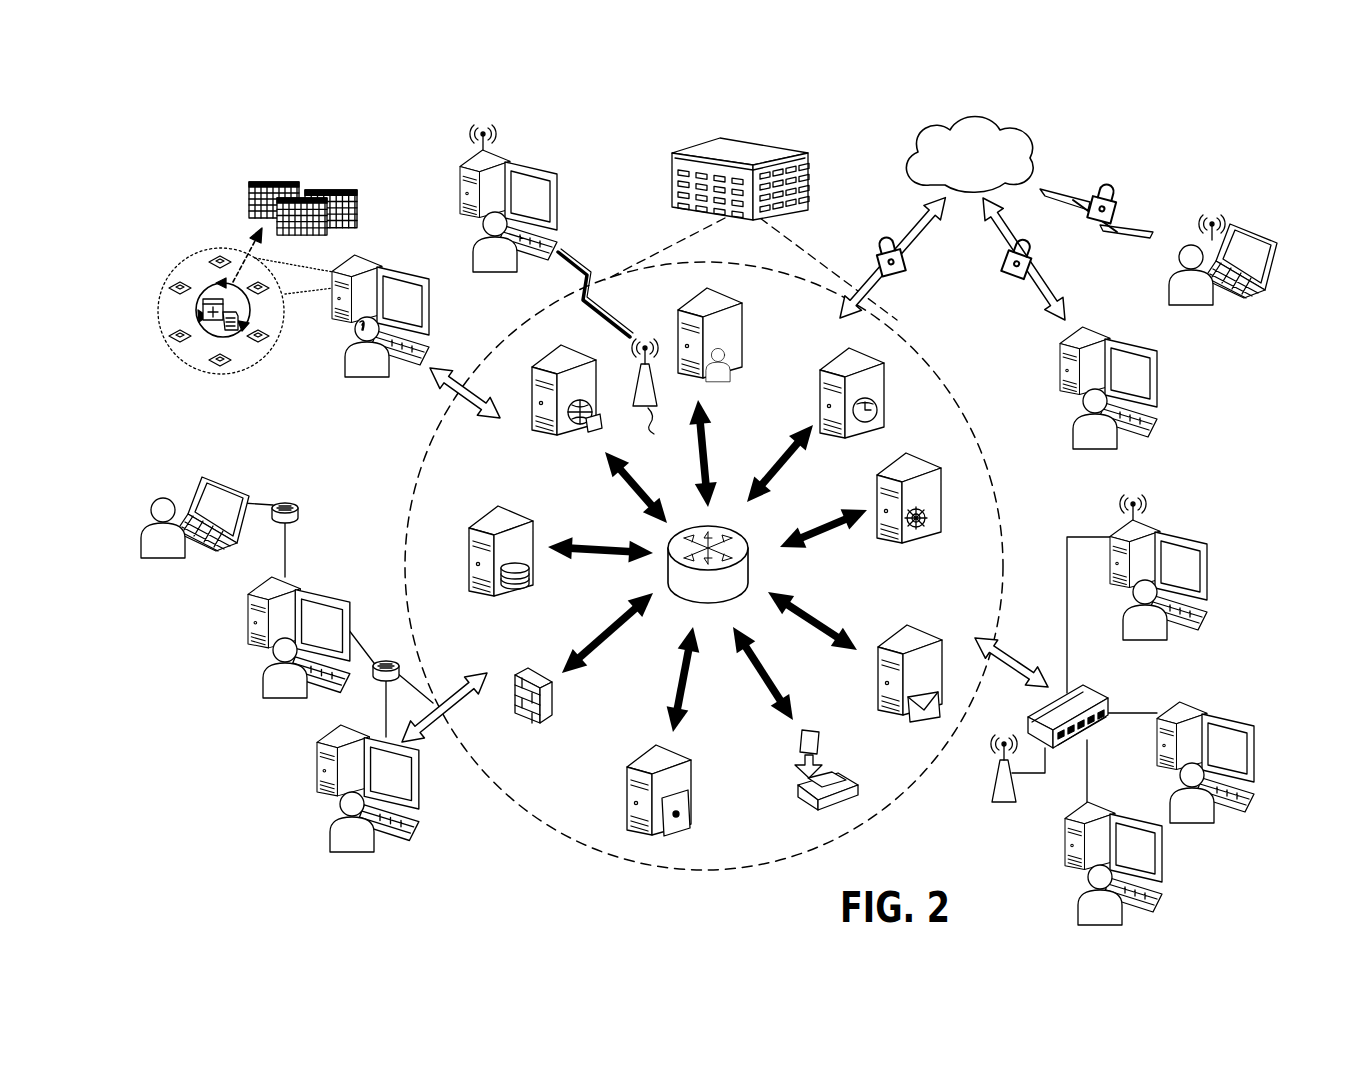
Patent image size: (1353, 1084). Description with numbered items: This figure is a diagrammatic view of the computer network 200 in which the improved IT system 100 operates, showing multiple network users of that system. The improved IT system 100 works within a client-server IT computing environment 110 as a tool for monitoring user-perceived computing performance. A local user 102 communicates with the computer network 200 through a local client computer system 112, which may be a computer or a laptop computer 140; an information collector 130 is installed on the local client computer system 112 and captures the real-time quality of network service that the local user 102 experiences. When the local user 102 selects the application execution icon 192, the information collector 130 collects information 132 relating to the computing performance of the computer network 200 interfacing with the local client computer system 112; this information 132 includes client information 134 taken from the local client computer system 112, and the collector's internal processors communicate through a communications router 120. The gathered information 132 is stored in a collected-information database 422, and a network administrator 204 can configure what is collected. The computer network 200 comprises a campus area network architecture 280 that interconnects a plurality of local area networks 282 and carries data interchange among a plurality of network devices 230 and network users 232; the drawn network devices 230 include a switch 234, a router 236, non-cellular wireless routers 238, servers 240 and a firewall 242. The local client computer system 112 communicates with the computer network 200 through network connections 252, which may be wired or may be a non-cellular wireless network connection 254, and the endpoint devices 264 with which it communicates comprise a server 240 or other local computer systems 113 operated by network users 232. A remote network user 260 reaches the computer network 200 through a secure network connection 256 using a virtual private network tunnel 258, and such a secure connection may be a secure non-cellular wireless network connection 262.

The improved IT system 100 is at (188, 145).
The local user 102 is at (378, 384).
The client-server IT computing environment 110 is at (350, 145).
The local client computer system 112 is at (397, 293).
The other local computer systems 113 is at (734, 518).
The communications router 120 is at (205, 342).
The information collector 130 is at (215, 315).
The information 132 is at (290, 197).
The client information 134 is at (1017, 652).
The laptop computer 140 is at (1272, 232).
The application execution icon 192 is at (415, 320).
The computer network 200 is at (1216, 141).
The network administrator 204 is at (673, 153).
The network devices 230 is at (951, 397).
The network users 232 is at (700, 568).
The switch 234 is at (1028, 718).
The router 236 is at (298, 505).
The non-cellular wireless routers 238 is at (993, 801).
The server 240 is at (547, 360).
The firewall 242 is at (550, 716).
The network connection 252 is at (446, 398).
The non-cellular wireless network connection 254 is at (588, 283).
The secure network connection 256 is at (905, 282).
The virtual private network (VPN) tunnel 258 is at (1044, 134).
The remote network user 260 is at (1172, 273).
The secure non-cellular wireless network connection 262 is at (1115, 184).
The endpoint device 264 is at (734, 536).
The campus area network architecture 280 is at (752, 169).
The local area networks 282 is at (717, 640).
The collected-information database 422 is at (236, 200).